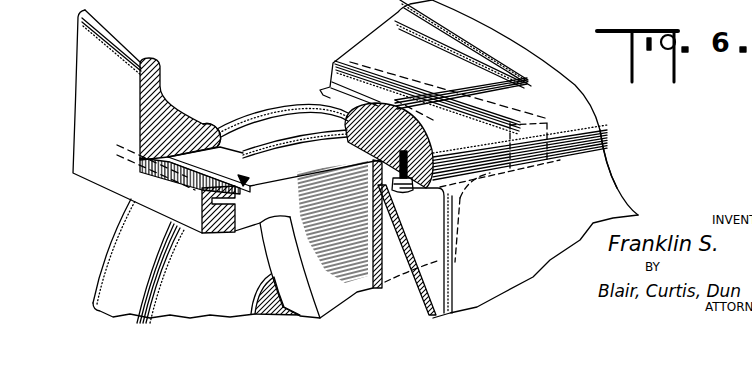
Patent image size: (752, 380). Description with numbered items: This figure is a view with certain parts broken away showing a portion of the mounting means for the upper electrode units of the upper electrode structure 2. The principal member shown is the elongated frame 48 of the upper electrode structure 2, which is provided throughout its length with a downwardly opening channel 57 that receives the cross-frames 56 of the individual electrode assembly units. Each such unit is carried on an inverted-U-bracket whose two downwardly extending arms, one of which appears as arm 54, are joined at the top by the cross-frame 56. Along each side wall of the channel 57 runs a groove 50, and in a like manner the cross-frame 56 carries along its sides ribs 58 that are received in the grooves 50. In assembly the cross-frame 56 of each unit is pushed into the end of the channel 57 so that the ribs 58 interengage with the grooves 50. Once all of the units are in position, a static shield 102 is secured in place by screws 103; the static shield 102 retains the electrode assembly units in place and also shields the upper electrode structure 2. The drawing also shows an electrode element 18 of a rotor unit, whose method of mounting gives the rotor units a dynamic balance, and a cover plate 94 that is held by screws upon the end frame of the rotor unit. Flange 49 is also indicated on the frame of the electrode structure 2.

The upper electrode structure 2 is at (619, 121).
The electrode element 18 is at (124, 247).
The elongated frame 48 is at (356, 40).
The flange 49 is at (146, 72).
The groove 50 is at (201, 201).
The downwardly extending arm 54 is at (287, 245).
The cross-frame 56 is at (233, 157).
The channel 57 is at (201, 128).
The rib 58 is at (233, 205).
The cover plate 94 is at (268, 304).
The static shield 102 is at (602, 183).
The screw 103 is at (396, 190).